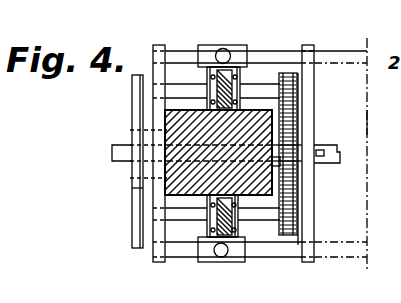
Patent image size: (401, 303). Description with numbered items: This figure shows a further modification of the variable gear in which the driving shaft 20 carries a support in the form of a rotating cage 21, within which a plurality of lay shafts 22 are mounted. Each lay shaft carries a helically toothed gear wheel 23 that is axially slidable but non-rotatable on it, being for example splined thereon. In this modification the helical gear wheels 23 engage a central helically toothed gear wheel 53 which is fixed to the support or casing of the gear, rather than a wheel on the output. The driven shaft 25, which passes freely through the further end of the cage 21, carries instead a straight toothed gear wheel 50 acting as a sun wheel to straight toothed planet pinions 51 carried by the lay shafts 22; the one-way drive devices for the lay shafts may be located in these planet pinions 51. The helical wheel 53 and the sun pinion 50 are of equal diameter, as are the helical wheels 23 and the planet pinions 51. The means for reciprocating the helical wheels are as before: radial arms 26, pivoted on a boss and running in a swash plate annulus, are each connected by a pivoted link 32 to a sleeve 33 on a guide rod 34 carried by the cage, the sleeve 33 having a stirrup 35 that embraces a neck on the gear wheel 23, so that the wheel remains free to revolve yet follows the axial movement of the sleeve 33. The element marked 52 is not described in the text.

The driving shaft 20 is at (339, 147).
The rotating cage 21 is at (153, 52).
The lay shafts 22 is at (165, 85).
The helically toothed gear wheel 23 is at (157, 86).
The driven shaft 25 is at (121, 145).
The radial arms 26 is at (369, 123).
The pivoted link 32 is at (345, 51).
The sleeve 33 is at (231, 46).
The guide rod 34 is at (284, 51).
The stirrup 35 is at (241, 78).
The straight toothed gear wheel 50 is at (303, 168).
The straight toothed gear wheels 51 is at (300, 77).
The plate 52 is at (135, 188).
The central helically toothed gear wheel 53 is at (165, 190).